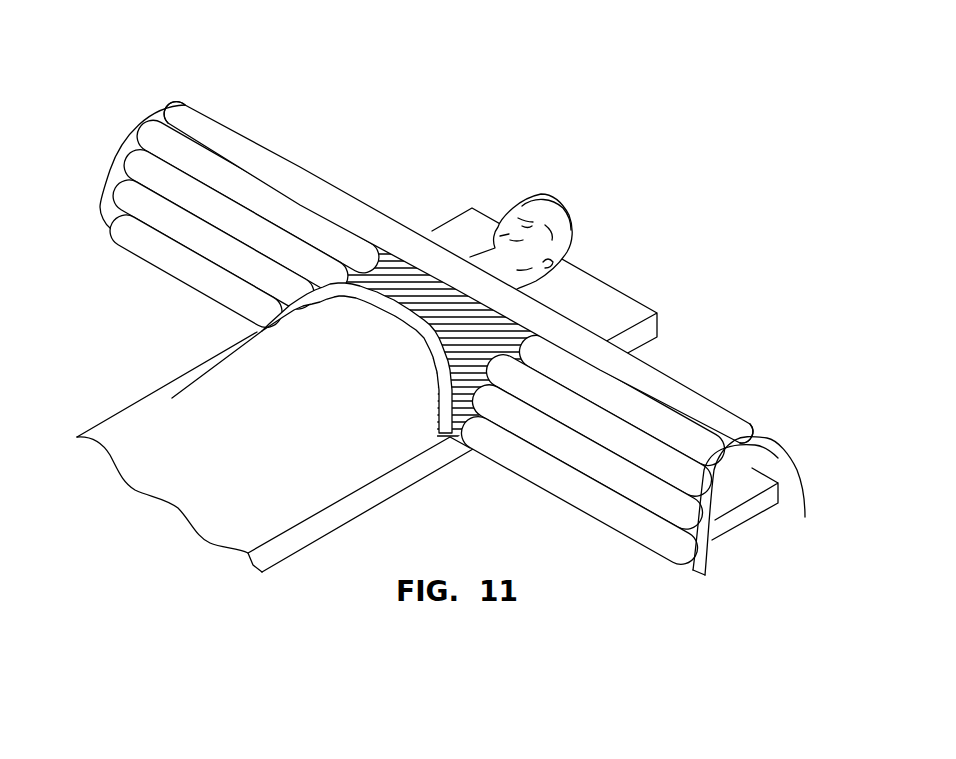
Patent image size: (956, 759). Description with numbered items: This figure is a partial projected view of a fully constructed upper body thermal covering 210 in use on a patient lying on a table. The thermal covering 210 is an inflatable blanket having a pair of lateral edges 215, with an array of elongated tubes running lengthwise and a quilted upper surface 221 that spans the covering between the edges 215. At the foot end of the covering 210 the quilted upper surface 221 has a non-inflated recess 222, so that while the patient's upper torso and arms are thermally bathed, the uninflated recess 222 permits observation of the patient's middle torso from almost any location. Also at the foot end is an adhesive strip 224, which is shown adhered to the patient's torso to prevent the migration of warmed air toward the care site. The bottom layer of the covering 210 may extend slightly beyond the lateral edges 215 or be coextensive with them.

The upper body thermal covering 210 is at (617, 268).
The lateral edges 215 is at (163, 110).
The quilted upper surface 221 is at (333, 192).
The non-inflated recess 222 is at (435, 282).
The adhesive strip 224 is at (431, 324).